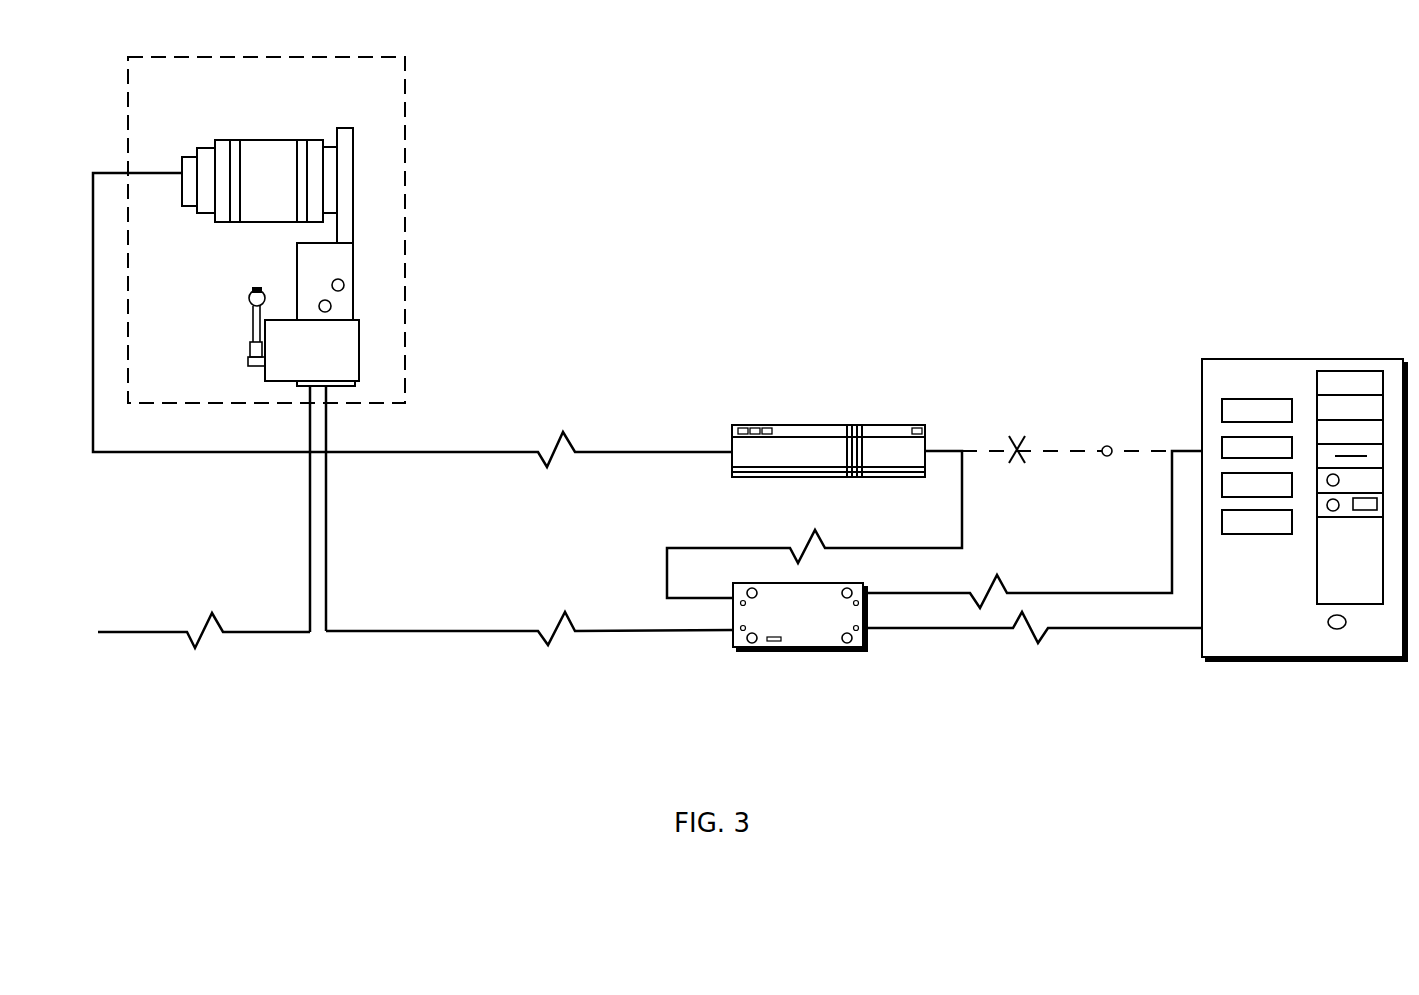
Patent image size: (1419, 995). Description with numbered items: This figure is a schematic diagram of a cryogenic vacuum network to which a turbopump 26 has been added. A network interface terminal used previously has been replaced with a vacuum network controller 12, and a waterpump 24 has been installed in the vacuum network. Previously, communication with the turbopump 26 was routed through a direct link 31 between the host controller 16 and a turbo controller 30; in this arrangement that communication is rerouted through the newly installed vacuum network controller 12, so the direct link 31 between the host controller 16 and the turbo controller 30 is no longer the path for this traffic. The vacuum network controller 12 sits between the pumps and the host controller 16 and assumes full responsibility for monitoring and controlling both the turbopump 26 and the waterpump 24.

The vacuum network controller 12 is at (784, 621).
The host controller 16 is at (1268, 609).
The waterpump 24 is at (299, 362).
The turbopump 26 is at (267, 185).
The turbo controller 30 is at (780, 437).
The direct link 31 is at (1107, 446).